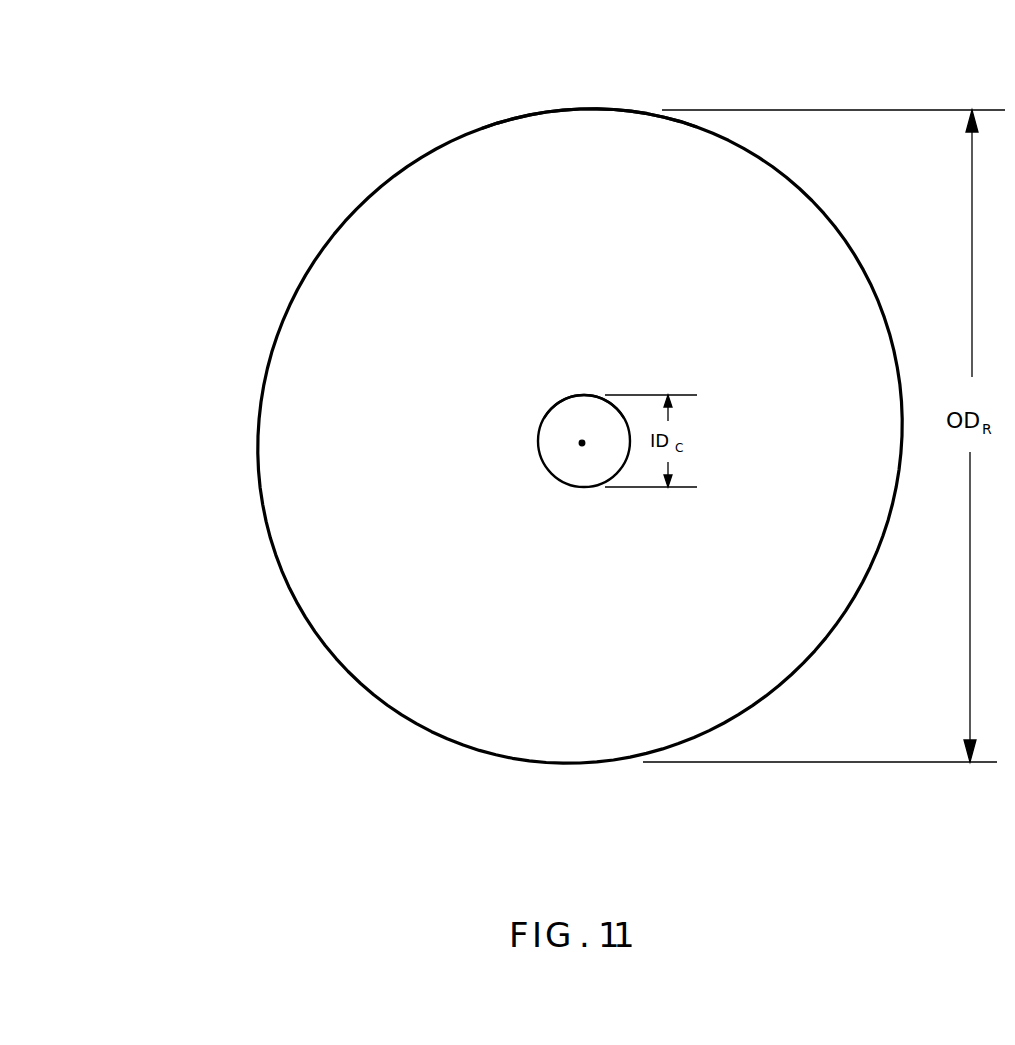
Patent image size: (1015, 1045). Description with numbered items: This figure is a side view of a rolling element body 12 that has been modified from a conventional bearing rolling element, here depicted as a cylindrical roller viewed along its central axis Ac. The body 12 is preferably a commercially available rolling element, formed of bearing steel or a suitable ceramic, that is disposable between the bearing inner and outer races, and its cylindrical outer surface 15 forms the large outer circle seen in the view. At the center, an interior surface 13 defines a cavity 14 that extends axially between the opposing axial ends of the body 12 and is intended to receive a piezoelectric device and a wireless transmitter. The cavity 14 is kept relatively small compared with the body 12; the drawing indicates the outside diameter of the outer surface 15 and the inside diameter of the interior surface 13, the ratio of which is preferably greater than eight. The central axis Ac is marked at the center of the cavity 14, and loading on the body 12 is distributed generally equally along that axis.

The rolling element body 12 is at (210, 600).
The interior surface 13 is at (582, 485).
The cavity 14 is at (570, 410).
The cylindrical outer surface 15 is at (487, 123).
The central axis Ac is at (580, 443).